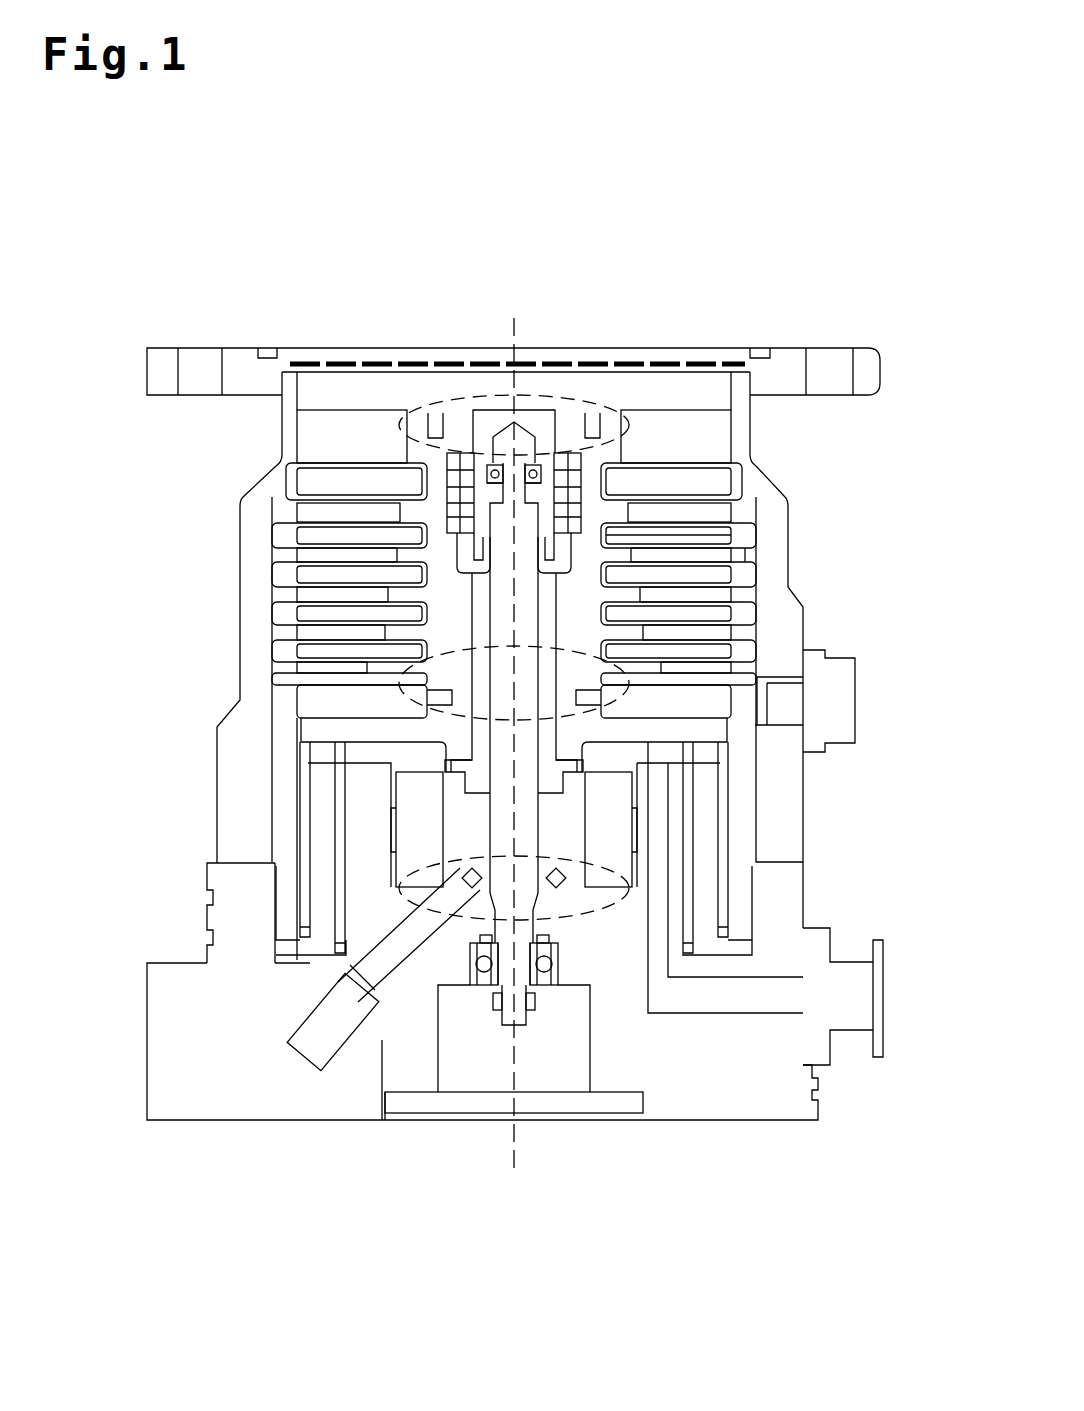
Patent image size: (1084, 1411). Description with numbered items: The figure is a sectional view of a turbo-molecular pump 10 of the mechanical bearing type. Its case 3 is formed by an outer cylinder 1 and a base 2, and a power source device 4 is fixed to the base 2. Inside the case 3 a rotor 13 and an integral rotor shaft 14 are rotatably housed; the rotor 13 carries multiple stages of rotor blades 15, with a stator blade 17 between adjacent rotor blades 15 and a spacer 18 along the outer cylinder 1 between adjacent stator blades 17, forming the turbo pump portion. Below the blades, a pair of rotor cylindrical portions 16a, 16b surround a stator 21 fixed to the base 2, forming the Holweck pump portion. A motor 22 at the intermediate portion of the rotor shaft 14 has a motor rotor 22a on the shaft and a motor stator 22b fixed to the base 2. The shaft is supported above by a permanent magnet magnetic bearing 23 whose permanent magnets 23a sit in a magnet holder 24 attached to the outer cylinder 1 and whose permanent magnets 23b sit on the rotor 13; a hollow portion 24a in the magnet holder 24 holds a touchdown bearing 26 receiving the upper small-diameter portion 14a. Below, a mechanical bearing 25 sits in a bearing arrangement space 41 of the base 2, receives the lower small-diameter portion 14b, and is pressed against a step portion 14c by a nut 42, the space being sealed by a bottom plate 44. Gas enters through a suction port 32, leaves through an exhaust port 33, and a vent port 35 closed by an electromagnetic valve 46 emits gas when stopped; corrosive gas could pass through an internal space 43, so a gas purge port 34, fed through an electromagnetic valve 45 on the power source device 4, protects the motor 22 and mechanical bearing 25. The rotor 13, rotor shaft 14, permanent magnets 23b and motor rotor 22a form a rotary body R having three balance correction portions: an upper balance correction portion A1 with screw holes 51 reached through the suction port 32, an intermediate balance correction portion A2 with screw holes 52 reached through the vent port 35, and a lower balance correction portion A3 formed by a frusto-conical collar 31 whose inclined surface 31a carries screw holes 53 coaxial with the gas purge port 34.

The turbo-molecular pump 10 is at (163, 248).
The rotor 13 is at (330, 440).
The rotary body R is at (372, 410).
The permanent magnet magnetic bearing 23 is at (471, 399).
The permanent magnets 23a is at (457, 462).
The permanent magnets 23b is at (447, 470).
The upper balance correction portion A1 is at (545, 385).
The upper small-diameter portion 14a is at (520, 455).
The magnet holder 24 is at (538, 450).
The bearing 26 is at (532, 442).
The screw holes 51 is at (563, 413).
The suction port 32 is at (613, 412).
The rotor blades 15 is at (673, 432).
The hollow portion 24a is at (493, 493).
The rotor shaft 14 is at (490, 603).
The stator blade 17 is at (697, 537).
The spacer 18 is at (743, 557).
The vent port 35 is at (807, 627).
The electromagnetic valve 46 is at (830, 682).
The intermediate balance correction portion A2 is at (490, 652).
The screw holes 52 is at (433, 697).
The internal space 43 is at (637, 755).
The rotor cylindrical portion 16b is at (723, 793).
The rotor cylindrical portion 16a is at (688, 812).
The motor rotor 22a is at (570, 812).
The motor stator 22b is at (622, 847).
The motor 22 is at (678, 839).
The outer cylinder 1 is at (230, 737).
The base 2 is at (230, 887).
The case 3 is at (115, 732).
The power source device 4 is at (220, 1053).
The stator 21 is at (322, 887).
The electromagnetic valve 45 is at (322, 1023).
The gas purge port 34 is at (410, 947).
The inclined surface 31a is at (475, 880).
The screw holes 53 is at (482, 985).
The nut 42 is at (497, 1000).
The lower small-diameter portion 14b is at (503, 1030).
The bottom plate 44 is at (528, 1100).
The bearing arrangement space 41 is at (533, 1065).
The mechanical bearing 25 is at (553, 977).
The step portion 14c is at (540, 902).
The collar 31 is at (560, 945).
The lower balance correction portion A3 is at (575, 905).
The exhaust port 33 is at (775, 1003).